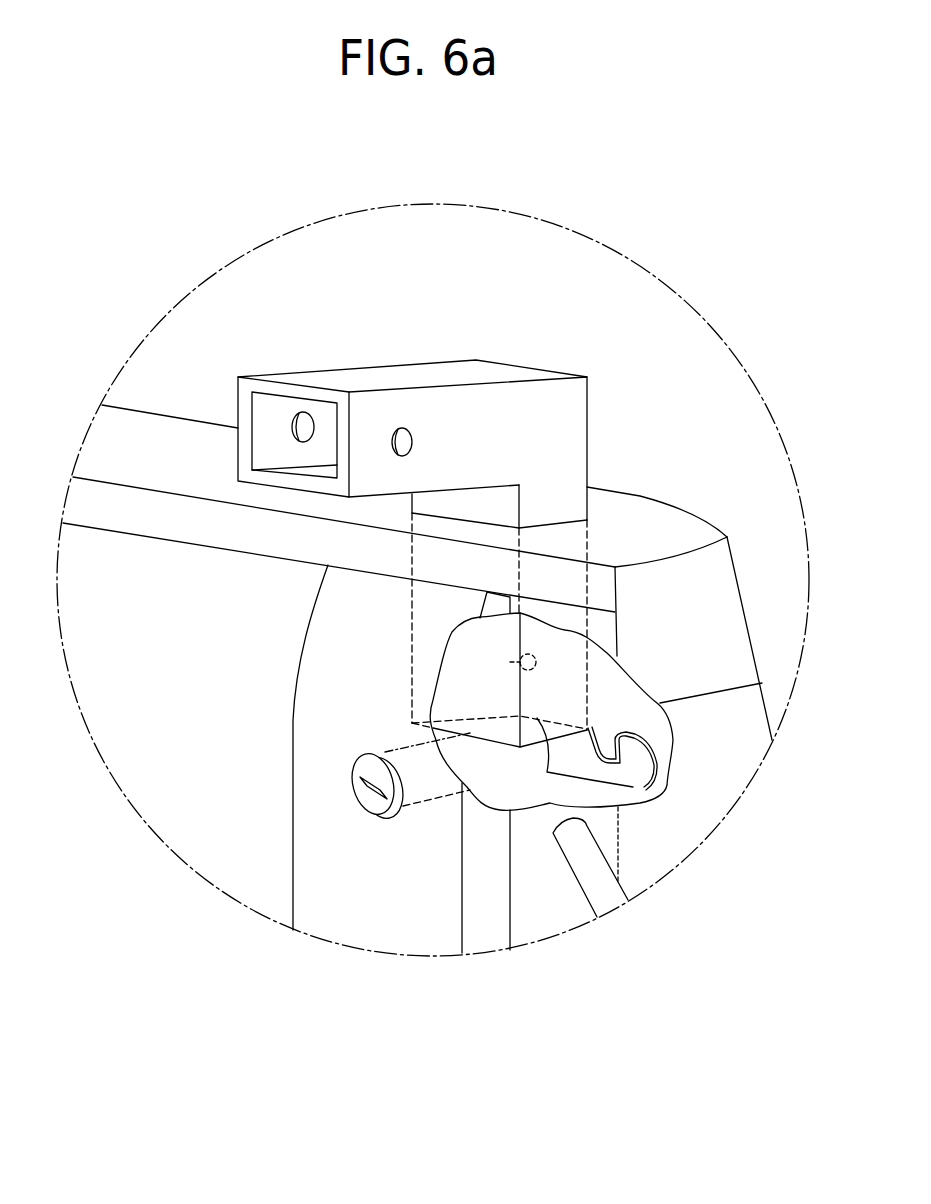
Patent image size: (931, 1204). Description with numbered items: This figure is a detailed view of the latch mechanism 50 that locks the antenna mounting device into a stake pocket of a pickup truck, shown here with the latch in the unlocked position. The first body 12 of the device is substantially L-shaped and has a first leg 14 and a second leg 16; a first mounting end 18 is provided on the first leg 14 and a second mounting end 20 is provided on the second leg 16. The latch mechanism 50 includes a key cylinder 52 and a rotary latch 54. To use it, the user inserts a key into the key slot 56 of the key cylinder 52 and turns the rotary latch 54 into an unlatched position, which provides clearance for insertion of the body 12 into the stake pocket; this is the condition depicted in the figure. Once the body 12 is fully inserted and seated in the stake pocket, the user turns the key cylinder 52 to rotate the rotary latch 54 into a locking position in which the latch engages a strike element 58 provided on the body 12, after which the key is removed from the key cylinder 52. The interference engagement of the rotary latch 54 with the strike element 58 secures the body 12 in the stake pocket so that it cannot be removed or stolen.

The first body 12 is at (552, 370).
The first leg 14 is at (565, 505).
The second leg 16 is at (373, 377).
The first mounting end 18 is at (483, 742).
The second mounting end 20 is at (280, 395).
The latch mechanism 50 is at (355, 861).
The key cylinder 52 is at (407, 747).
The rotary latch 54 is at (632, 772).
The key slot 56 is at (367, 790).
The strike element 58 is at (538, 660).